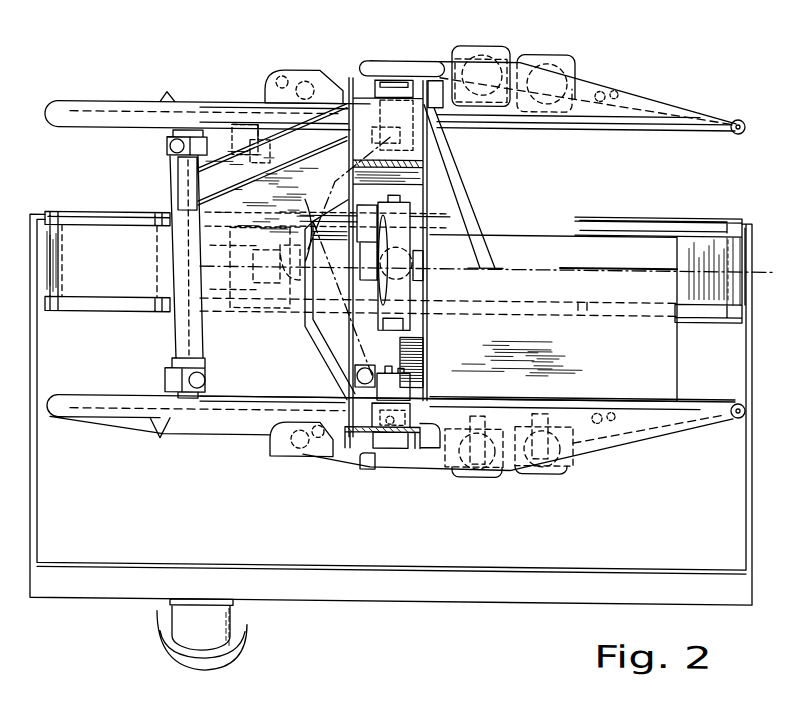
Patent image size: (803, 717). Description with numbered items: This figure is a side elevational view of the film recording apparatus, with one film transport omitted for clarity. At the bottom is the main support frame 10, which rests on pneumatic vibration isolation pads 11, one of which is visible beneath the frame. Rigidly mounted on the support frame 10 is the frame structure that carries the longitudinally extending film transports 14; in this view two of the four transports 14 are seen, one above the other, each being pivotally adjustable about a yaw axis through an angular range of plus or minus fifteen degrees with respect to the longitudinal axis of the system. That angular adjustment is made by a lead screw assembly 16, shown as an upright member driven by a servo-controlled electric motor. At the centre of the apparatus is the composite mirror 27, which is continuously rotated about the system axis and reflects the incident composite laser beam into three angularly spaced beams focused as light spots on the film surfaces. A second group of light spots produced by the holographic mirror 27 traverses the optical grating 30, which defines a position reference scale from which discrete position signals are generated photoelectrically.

The main support frame 10 is at (83, 553).
The pneumatic vibration isolation pad 11 is at (178, 628).
The film transport 14 is at (648, 91).
The lead screw assembly 16 is at (173, 326).
The composite mirror 27 is at (313, 219).
The optical grating 30 is at (417, 359).